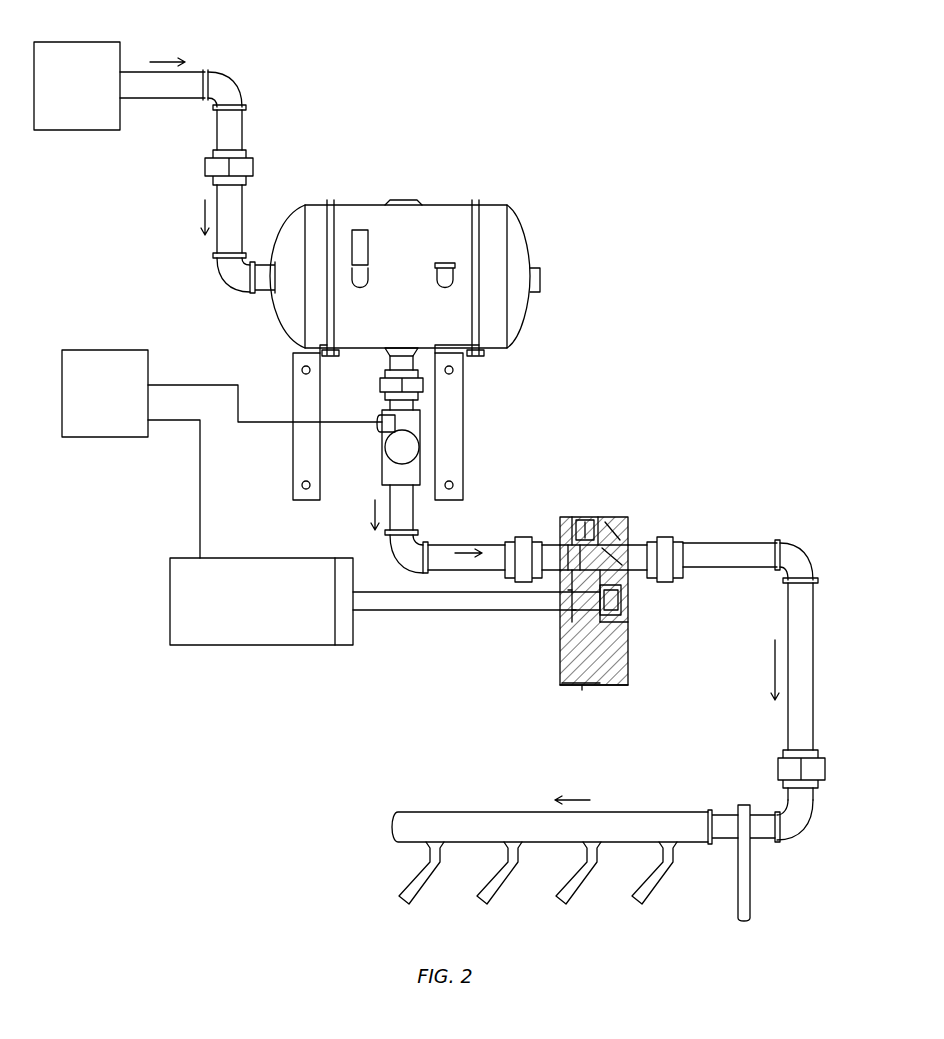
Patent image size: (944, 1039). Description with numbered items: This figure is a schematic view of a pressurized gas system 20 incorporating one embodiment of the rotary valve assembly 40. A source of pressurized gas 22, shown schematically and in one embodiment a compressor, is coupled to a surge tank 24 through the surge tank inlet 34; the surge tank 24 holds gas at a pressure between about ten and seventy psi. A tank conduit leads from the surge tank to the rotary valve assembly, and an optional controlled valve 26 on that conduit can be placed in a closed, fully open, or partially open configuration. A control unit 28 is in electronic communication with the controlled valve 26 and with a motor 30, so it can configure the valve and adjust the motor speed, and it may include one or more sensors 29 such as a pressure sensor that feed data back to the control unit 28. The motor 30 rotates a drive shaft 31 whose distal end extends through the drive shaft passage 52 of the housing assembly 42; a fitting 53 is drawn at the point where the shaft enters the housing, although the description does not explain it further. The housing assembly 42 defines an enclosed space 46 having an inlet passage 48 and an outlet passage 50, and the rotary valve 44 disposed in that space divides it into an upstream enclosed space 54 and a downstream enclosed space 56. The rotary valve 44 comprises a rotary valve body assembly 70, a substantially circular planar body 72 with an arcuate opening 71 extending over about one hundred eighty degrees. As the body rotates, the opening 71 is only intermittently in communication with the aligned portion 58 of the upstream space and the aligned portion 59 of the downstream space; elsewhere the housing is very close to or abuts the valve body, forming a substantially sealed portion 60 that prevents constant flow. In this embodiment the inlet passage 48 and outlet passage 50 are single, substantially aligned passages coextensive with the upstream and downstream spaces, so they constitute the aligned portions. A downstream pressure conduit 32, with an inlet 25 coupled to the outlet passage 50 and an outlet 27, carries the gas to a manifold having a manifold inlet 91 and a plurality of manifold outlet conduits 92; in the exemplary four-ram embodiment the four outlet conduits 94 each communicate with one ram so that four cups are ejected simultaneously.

The pressurized gas system 20 is at (438, 102).
The source of pressurized gas 22 is at (58, 95).
The surge tank 24 is at (516, 232).
The inlet 25 is at (648, 556).
The controlled valve 26 is at (390, 472).
The outlet 27 is at (738, 842).
The control unit 28 is at (88, 397).
The sensor 29 is at (385, 432).
The motor 30 is at (248, 606).
The drive shaft 31 is at (420, 612).
The downstream pressure conduit 32 is at (787, 606).
The inlet 34 is at (276, 262).
The rotary valve assembly 40 is at (612, 520).
The housing assembly 42 is at (576, 520).
The rotary valve 44 is at (630, 672).
The enclosed space 46 is at (572, 605).
The inlet passage 48 is at (570, 552).
The outlet passage 50 is at (625, 555).
The drive shaft passage 52 is at (566, 622).
The fitting 53 is at (622, 606).
The upstream enclosed space 54 is at (527, 543).
The downstream enclosed space 56 is at (660, 573).
The aligned portion of the upstream enclosed space 58 is at (588, 520).
The aligned portion of the downstream enclosed space 59 is at (612, 545).
The substantially sealed portion 60 is at (608, 645).
The rotary valve body assembly 70 is at (586, 688).
The opening 71 is at (593, 528).
The planar body 72 is at (574, 684).
The manifold inlet 91 is at (718, 812).
The manifold outlet conduits 92 is at (392, 869).
The outlet conduits 94 is at (428, 898).